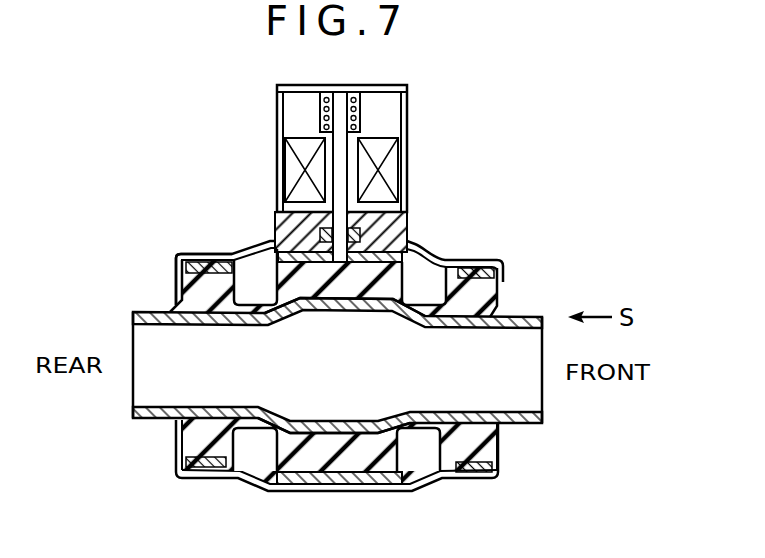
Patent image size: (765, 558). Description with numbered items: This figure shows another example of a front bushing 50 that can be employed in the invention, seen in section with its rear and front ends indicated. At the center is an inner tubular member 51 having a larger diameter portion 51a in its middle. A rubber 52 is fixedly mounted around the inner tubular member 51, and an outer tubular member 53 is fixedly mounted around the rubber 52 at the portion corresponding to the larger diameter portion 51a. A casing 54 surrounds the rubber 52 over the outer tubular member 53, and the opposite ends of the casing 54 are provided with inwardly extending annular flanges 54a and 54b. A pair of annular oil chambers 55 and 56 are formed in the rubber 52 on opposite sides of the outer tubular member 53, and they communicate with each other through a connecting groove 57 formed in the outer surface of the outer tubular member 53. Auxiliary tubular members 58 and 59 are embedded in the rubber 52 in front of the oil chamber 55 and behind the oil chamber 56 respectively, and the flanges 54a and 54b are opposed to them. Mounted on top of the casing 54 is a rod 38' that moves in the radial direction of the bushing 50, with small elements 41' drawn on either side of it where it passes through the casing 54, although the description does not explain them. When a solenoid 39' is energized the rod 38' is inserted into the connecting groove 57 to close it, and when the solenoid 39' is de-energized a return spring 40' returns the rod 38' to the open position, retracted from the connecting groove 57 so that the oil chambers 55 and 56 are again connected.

The rod 38' is at (395, 177).
The solenoid 39' is at (369, 148).
The return spring 40' is at (293, 109).
The seal ring 41' is at (295, 197).
The front bushing 50 is at (500, 474).
The inner tubular member 51 is at (545, 315).
The larger diameter portion 51a is at (332, 320).
The rubber 52 is at (487, 290).
The outer tubular member 53 is at (345, 486).
The casing 54 is at (396, 228).
The annular flange 54a is at (496, 264).
The annular flange 54b is at (176, 462).
The oil chamber 55 is at (434, 303).
The oil chamber 56 is at (252, 304).
The connecting groove 57 is at (286, 255).
The auxiliary tubular member 58 is at (471, 260).
The auxiliary tubular member 59 is at (178, 257).